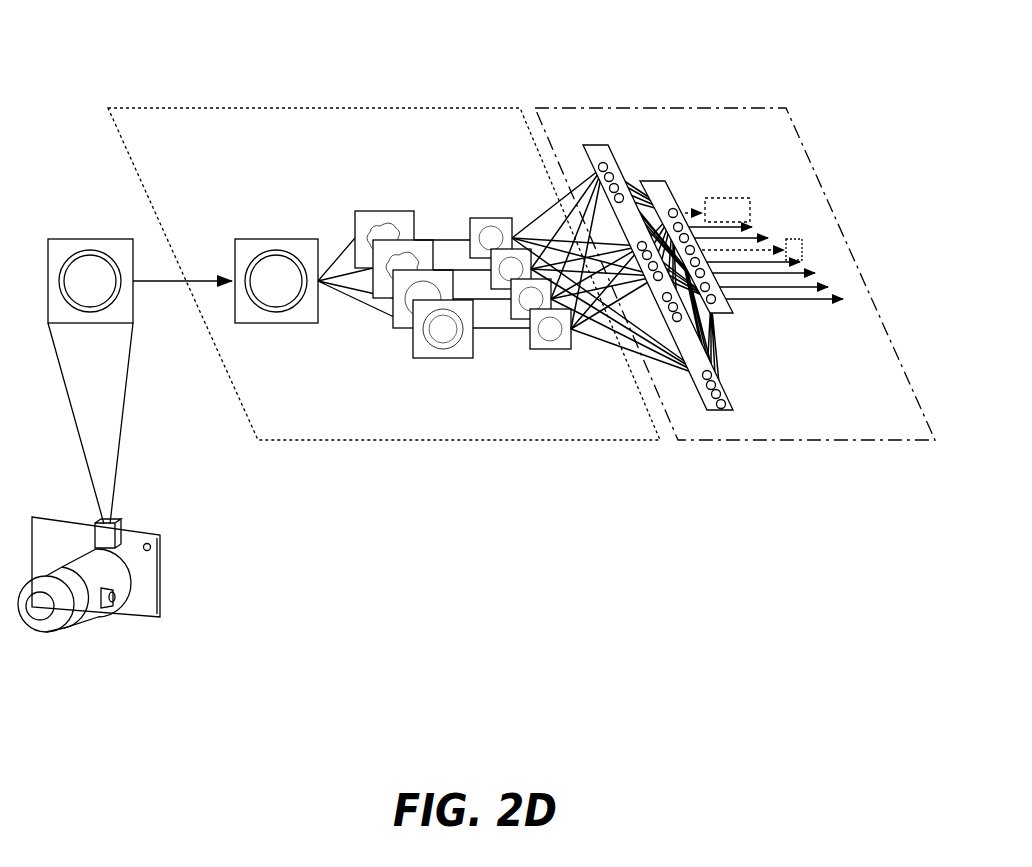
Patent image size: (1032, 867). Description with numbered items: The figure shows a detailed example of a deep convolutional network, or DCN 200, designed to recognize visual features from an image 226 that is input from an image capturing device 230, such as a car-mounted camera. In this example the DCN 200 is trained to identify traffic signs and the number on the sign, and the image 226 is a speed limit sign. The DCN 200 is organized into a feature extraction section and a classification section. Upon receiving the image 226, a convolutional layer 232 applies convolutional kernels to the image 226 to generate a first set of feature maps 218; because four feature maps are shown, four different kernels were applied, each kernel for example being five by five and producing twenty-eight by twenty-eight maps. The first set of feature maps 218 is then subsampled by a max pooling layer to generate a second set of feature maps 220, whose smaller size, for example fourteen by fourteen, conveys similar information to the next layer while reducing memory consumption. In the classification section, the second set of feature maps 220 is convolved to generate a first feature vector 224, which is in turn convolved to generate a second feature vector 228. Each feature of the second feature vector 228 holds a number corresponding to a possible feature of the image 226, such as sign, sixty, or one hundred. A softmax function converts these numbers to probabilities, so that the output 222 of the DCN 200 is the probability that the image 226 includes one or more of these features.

The deep convolutional network 200 is at (176, 67).
The first set of feature maps 218 is at (376, 196).
The second set of feature maps 220 is at (476, 196).
The output 222 is at (716, 160).
The first feature vector 224 is at (596, 143).
The image 226 is at (85, 239).
The second feature vector 228 is at (730, 310).
The image capturing device 230 is at (87, 532).
The convolutional layer 232 is at (270, 239).